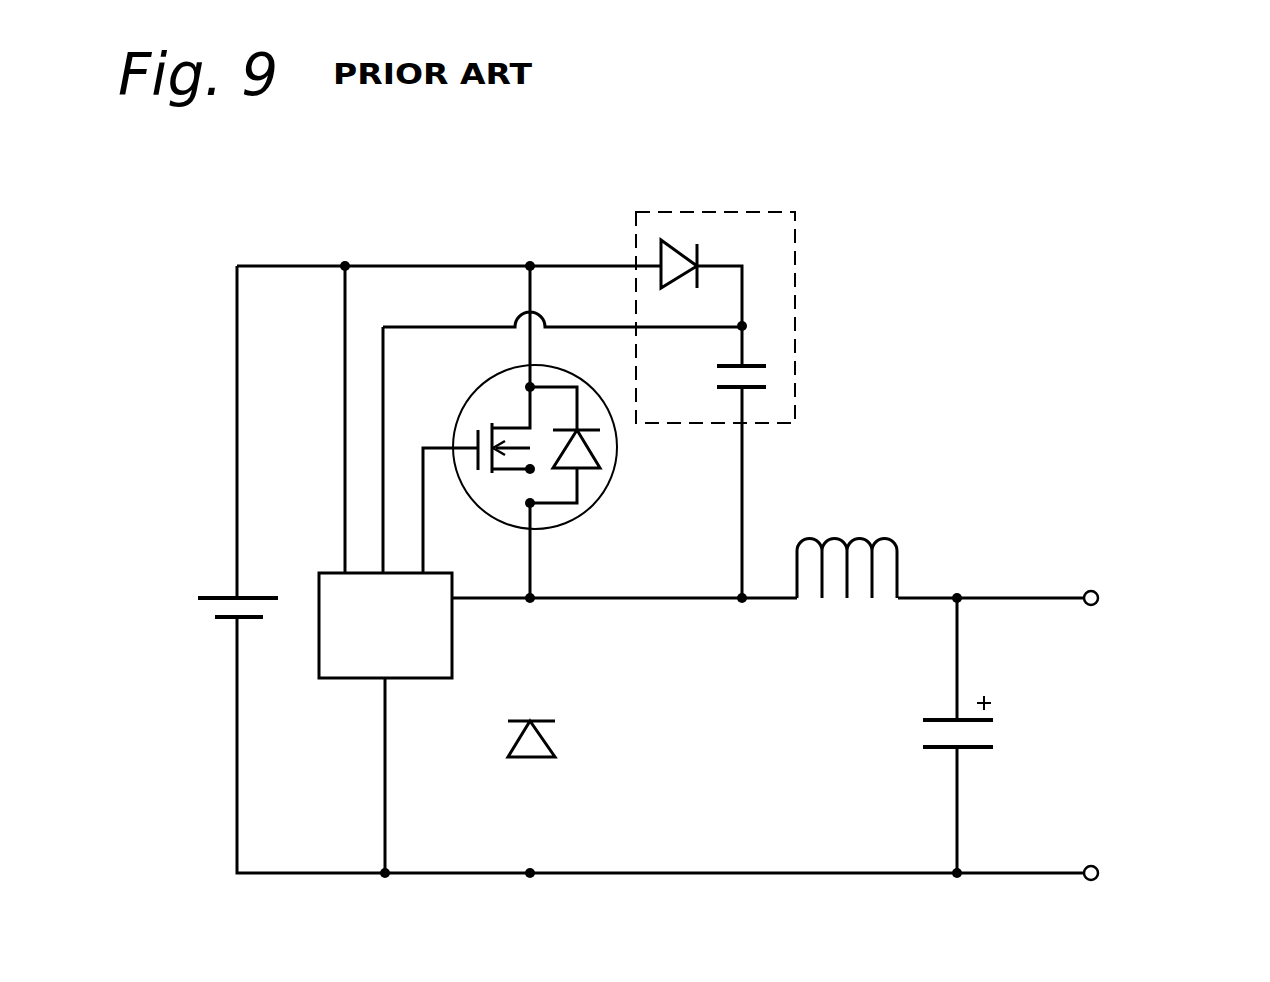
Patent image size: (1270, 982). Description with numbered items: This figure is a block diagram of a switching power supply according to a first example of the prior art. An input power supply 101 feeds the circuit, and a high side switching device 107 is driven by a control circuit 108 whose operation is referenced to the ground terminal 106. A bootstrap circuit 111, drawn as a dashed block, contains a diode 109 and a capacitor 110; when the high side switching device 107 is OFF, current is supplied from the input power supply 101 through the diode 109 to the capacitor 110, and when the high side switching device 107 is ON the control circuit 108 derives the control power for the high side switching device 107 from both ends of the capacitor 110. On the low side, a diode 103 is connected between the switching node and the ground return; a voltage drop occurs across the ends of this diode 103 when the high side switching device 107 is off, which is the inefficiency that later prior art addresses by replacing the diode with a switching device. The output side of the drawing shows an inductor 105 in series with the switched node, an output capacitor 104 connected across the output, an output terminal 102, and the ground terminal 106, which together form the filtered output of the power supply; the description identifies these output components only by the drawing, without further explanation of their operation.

The input power supply 101 is at (218, 596).
The output terminal 102 is at (1100, 592).
The diode 103 is at (565, 740).
The output capacitor 104 is at (998, 733).
The inductor (coil) 105 is at (850, 535).
The ground terminal 106 is at (1091, 866).
The high side switching device 107 is at (505, 367).
The control circuit 108 is at (333, 573).
The diode 109 is at (675, 235).
The capacitor 110 is at (757, 360).
The bootstrap circuit 111 is at (770, 208).